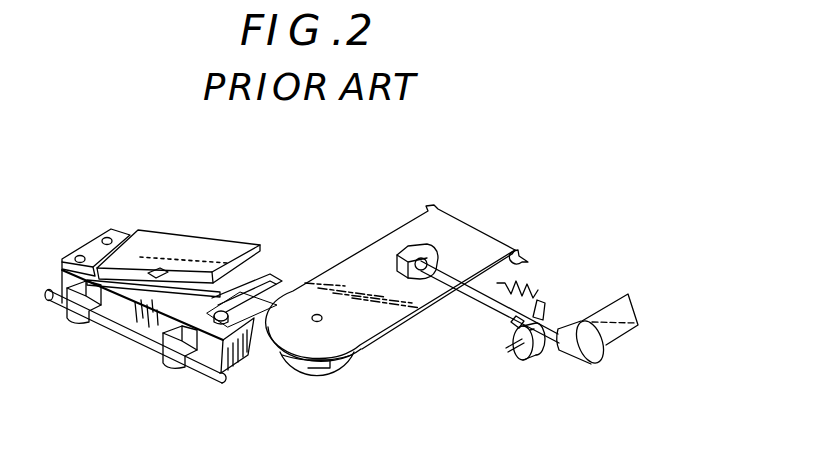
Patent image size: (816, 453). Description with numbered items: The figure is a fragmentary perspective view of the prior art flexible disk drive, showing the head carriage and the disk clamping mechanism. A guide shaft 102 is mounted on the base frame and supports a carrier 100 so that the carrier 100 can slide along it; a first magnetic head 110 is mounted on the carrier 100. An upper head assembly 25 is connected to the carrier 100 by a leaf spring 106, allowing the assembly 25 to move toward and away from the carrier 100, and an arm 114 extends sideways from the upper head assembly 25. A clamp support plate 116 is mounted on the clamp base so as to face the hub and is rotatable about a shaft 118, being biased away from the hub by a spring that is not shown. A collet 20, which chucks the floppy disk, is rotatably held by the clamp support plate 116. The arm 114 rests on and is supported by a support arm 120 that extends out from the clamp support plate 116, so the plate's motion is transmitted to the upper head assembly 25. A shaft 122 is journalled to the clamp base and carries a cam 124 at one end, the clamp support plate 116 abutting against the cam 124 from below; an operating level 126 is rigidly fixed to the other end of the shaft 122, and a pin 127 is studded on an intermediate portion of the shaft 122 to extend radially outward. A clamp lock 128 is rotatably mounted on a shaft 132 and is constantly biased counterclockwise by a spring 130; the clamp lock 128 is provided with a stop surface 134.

The collet 20 is at (328, 368).
The upper head assembly 25 is at (208, 243).
The carrier 100 is at (147, 328).
The guide shaft 102 is at (115, 327).
The leaf spring 106 is at (93, 249).
The first magnetic head 110 is at (238, 320).
The arm 114 is at (160, 276).
The clamp support plate 116 is at (348, 275).
The shaft 118 is at (520, 264).
The support arm 120 is at (273, 288).
The shaft 122 is at (463, 287).
The cam 124 is at (410, 248).
The operating level 126 is at (613, 316).
The pin 127 is at (508, 330).
The clamp lock 128 is at (544, 342).
The spring 130 is at (533, 286).
The shaft 132 is at (508, 348).
The stop surface 134 is at (538, 344).